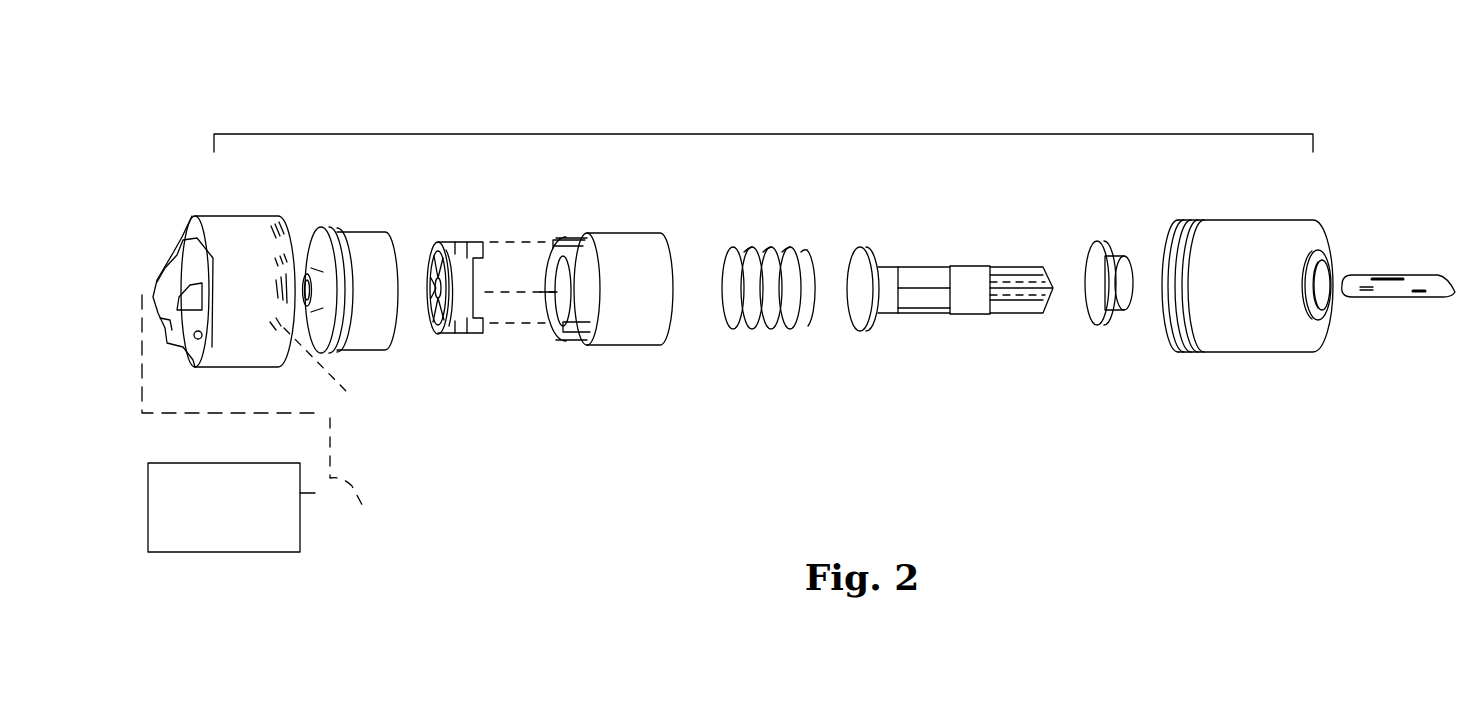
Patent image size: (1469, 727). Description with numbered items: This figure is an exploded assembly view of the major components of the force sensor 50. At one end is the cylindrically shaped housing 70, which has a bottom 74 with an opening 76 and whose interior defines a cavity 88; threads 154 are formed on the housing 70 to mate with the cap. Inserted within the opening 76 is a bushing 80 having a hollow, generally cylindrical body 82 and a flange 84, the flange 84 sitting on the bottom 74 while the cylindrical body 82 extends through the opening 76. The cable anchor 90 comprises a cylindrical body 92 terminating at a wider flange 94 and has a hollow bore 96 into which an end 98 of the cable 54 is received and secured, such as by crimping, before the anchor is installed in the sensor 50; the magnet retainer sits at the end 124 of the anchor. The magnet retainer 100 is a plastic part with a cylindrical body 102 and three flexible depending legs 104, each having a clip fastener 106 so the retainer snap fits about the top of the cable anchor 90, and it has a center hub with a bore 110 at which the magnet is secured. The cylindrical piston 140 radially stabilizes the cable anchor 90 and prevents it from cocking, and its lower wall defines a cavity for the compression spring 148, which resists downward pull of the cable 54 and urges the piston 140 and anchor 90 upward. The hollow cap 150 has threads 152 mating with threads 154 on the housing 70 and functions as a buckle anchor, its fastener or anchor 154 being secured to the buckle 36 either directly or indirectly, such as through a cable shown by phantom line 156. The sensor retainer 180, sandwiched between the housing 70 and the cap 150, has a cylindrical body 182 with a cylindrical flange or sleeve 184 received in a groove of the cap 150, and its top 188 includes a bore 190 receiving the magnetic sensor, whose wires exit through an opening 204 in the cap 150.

The sensor 50 is at (681, 134).
The buckle 36 is at (253, 552).
The phantom line 156 is at (264, 421).
The threads 152 is at (336, 368).
The cap 150 is at (238, 276).
The threads 154 is at (170, 266).
The opening 204 is at (203, 338).
The sensor retainer 180 is at (369, 305).
The cylindrical flange or sleeve 184 is at (352, 230).
The top of the sensor retainer 188 is at (327, 240).
The bore 190 is at (304, 272).
The magnet retainer 100 is at (490, 366).
The cylindrical body 102 is at (452, 318).
The flexible depending legs 104 is at (472, 335).
The clip fastener 106 is at (483, 258).
The bore 110 is at (440, 302).
The cylindrical body 182 is at (435, 288).
The cylindrical piston 140 is at (629, 222).
The compression spring 148 is at (759, 238).
The cable anchor 90 is at (943, 288).
The flange 94 is at (872, 250).
The end of the anchor 124 is at (852, 312).
The cylindrical body 92 is at (1001, 278).
The hollow bore 96 is at (1032, 253).
The bushing 80 is at (1096, 274).
The flange 84 is at (1100, 317).
The cylindrical body 82 is at (1110, 303).
The housing 70 is at (1296, 249).
The bottom 74 is at (1320, 243).
The opening 76 is at (1323, 268).
The cavity 88 is at (1280, 213).
The cable 54 is at (1398, 318).
The end of the cable 98 is at (1355, 293).